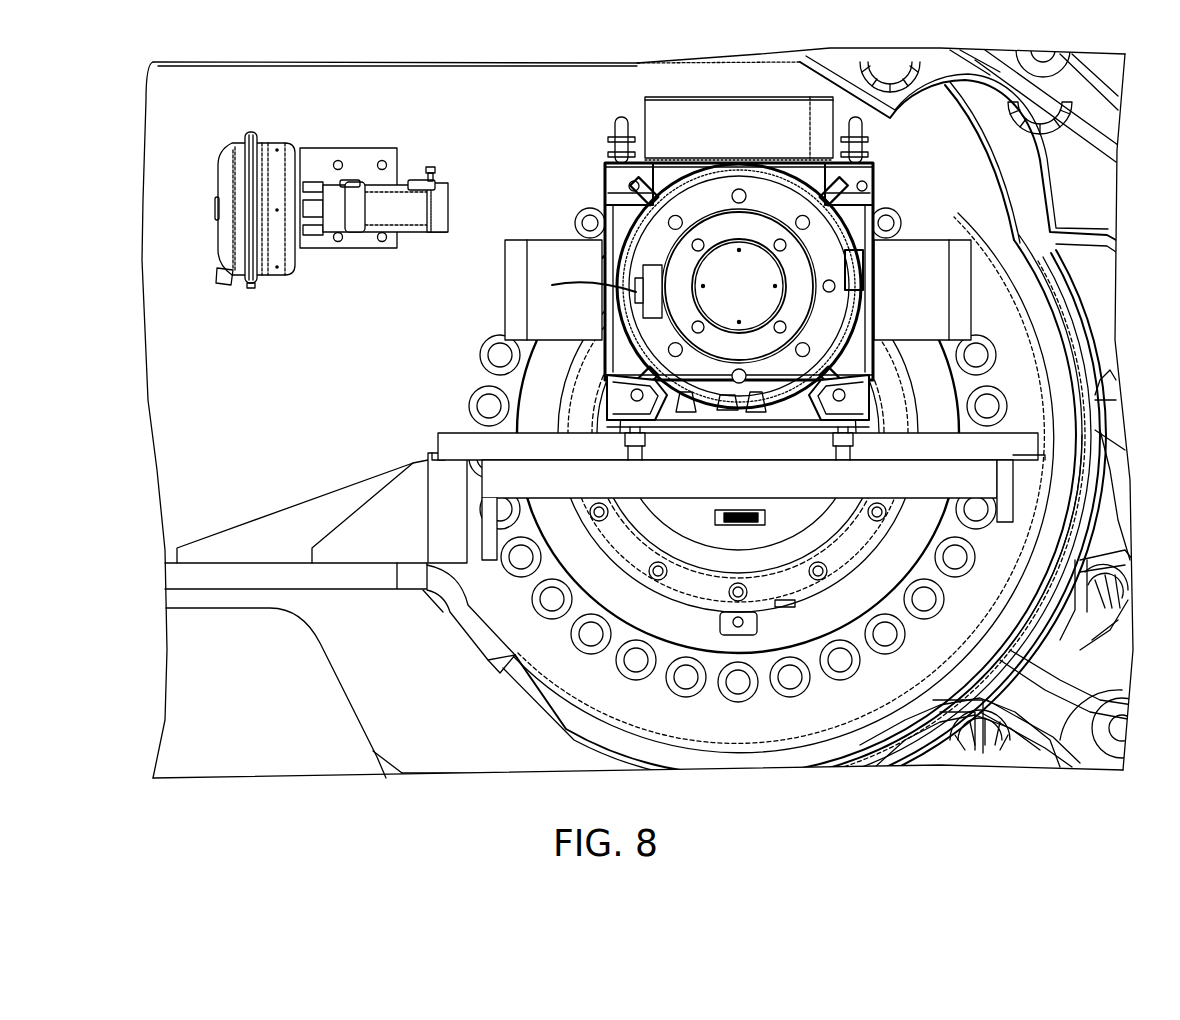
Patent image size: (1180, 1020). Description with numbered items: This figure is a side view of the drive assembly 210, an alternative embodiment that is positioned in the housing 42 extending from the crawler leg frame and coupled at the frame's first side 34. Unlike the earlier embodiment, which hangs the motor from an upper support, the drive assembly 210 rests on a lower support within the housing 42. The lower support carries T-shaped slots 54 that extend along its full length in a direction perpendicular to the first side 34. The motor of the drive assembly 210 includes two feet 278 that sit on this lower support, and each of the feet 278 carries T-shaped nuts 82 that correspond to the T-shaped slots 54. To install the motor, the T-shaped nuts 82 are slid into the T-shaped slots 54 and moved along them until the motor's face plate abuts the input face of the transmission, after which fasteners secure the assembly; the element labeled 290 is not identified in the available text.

The drive assembly 210 is at (456, 89).
The first side 34 is at (342, 351).
The feet 278 is at (612, 395).
The T-shaped slots 54 is at (630, 448).
The T-shaped nuts 82 is at (647, 444).
The housing 42 is at (250, 583).
The motor mounting plate 290 is at (511, 484).